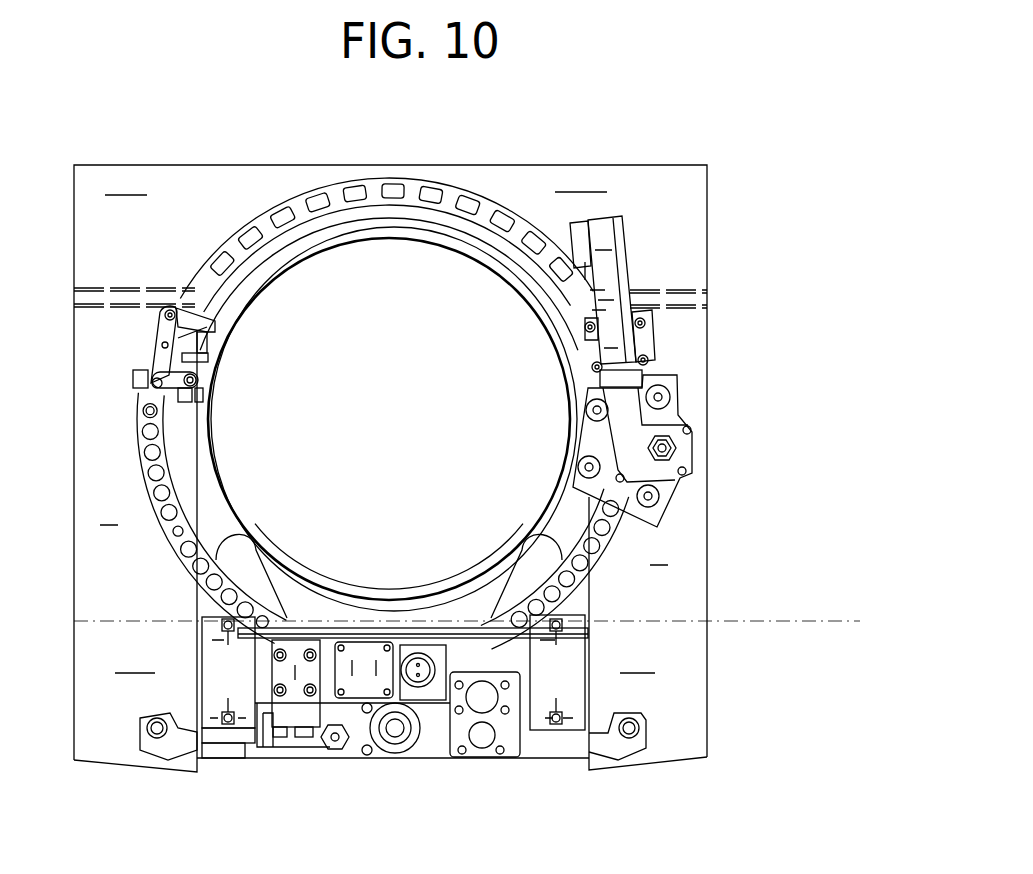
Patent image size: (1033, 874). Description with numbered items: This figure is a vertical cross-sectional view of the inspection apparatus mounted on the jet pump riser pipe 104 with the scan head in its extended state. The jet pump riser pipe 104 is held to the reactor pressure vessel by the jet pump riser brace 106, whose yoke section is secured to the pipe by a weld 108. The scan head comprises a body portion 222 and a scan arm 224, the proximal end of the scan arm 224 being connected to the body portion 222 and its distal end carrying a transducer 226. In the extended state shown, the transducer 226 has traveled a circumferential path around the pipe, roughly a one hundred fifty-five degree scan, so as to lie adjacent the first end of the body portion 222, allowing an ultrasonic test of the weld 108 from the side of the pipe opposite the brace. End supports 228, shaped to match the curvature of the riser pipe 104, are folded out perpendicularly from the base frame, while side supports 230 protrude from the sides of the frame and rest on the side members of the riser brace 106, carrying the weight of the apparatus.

The jet pump riser pipe 104 is at (543, 318).
The jet pump riser brace 106 is at (640, 192).
The weld 108 is at (467, 232).
The body portion 222 is at (215, 580).
The scan arm 224 is at (200, 292).
The transducer 226 is at (183, 366).
The end supports 228 is at (545, 548).
The side supports 230 is at (617, 745).